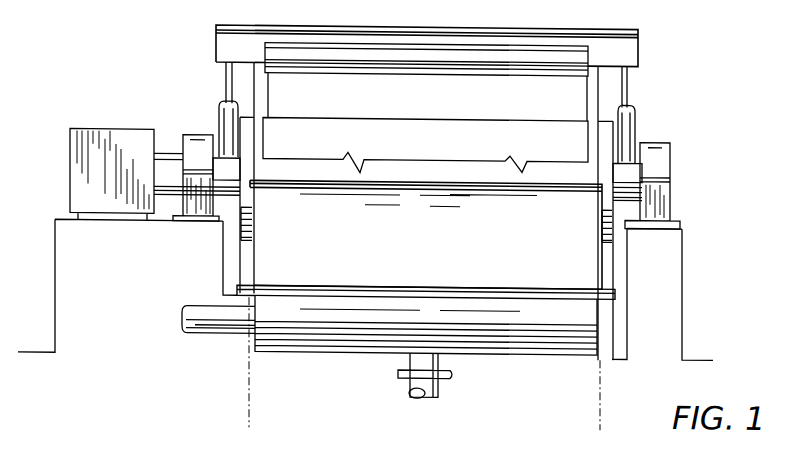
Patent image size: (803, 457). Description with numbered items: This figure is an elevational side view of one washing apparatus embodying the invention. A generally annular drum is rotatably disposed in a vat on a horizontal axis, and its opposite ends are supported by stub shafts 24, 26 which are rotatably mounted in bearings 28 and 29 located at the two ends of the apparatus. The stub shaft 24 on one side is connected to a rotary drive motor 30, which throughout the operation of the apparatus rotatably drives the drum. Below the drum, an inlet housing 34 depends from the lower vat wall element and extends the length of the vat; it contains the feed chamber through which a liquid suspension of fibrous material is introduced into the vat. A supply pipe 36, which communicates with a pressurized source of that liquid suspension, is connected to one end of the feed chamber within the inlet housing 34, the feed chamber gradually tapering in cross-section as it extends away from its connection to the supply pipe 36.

The stub shaft 24 is at (229, 177).
The stub shaft 26 is at (626, 183).
The bearing 28 is at (205, 129).
The bearing 29 is at (676, 138).
The rotary drive motor 30 is at (82, 163).
The inlet housing 34 is at (272, 333).
The supply pipe 36 is at (230, 323).